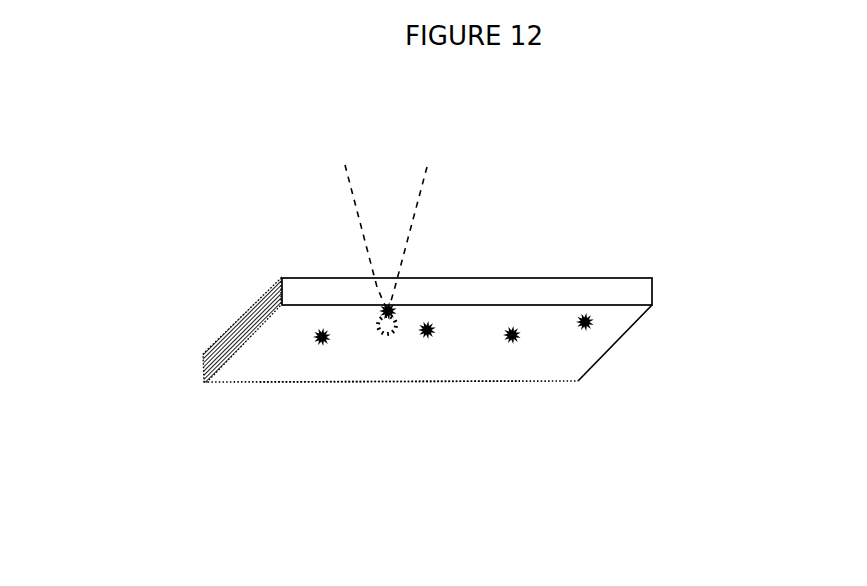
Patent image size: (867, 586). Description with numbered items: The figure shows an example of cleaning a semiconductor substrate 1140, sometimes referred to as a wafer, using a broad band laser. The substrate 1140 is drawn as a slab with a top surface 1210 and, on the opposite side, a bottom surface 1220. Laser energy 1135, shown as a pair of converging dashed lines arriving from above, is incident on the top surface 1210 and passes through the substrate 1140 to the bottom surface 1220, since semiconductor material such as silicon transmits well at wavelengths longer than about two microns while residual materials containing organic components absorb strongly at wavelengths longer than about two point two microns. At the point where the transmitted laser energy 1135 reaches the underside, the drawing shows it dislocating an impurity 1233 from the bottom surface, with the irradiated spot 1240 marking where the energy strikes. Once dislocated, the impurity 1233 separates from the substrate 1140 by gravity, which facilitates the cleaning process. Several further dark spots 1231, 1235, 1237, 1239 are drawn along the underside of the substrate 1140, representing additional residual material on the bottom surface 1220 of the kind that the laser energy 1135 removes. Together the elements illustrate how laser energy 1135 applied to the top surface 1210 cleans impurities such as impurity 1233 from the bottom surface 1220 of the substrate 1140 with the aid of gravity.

The top surface 1210 is at (603, 277).
The bottom surface 1220 is at (265, 358).
The substrate 1140 is at (233, 396).
The laser energy 1135 is at (350, 188).
The irradiated spot 1240 is at (389, 312).
The impurity 1233 is at (378, 330).
The first laser spot 1231 is at (320, 336).
The second laser spot 1235 is at (426, 337).
The third laser spot 1237 is at (512, 343).
The fourth laser spot 1239 is at (585, 330).